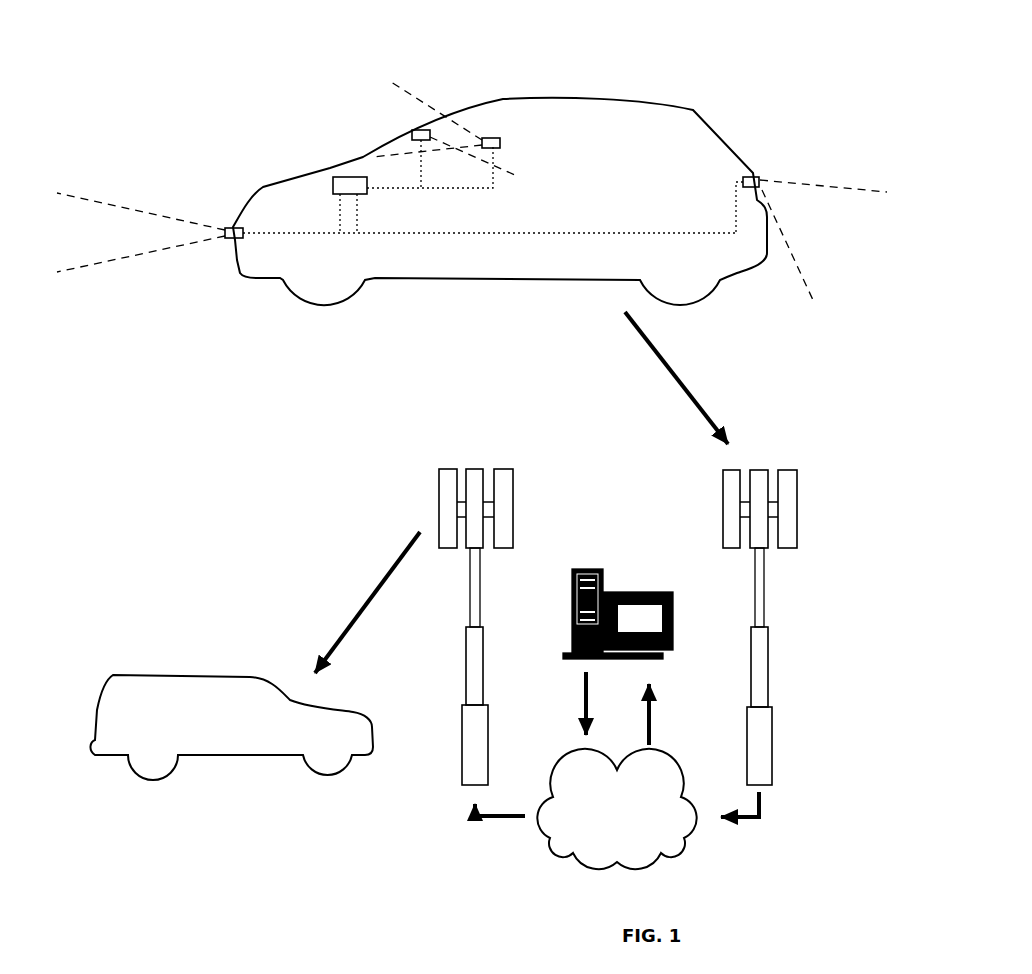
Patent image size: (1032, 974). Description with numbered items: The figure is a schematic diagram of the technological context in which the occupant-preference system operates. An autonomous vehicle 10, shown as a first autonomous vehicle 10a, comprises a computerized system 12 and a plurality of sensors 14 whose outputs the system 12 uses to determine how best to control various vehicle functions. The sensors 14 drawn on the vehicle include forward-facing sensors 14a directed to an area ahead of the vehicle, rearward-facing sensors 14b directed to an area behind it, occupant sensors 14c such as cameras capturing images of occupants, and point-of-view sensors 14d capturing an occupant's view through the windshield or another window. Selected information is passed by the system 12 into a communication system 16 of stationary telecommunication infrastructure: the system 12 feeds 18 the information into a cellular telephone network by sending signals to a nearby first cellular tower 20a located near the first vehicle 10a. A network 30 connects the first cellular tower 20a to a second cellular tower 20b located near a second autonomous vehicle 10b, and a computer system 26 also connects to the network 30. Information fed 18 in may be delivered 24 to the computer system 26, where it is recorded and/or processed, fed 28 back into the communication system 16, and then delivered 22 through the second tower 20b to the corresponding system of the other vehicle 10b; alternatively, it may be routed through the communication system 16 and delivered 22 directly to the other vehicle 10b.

The autonomous vehicle 10 is at (472, 396).
The first autonomous vehicle 10a is at (368, 47).
The second autonomous vehicle 10b is at (182, 655).
The computerized system 12 is at (352, 177).
The sensors 14 is at (472, 167).
The forward-facing sensors 14a is at (233, 227).
The rearward-facing sensors 14b is at (754, 177).
The occupant sensors 14c is at (422, 130).
The point-of-view sensors 14d is at (493, 138).
The communication system 16 is at (664, 626).
The feed of information 18 is at (658, 350).
The first cellular tower 20a is at (812, 483).
The second cellular tower 20b is at (525, 495).
The delivery to other vehicles 22 is at (368, 610).
The delivery to computer system 24 is at (650, 715).
The computer system 26 is at (643, 565).
The feed back into communication system 28 is at (583, 713).
The network 30 is at (630, 826).